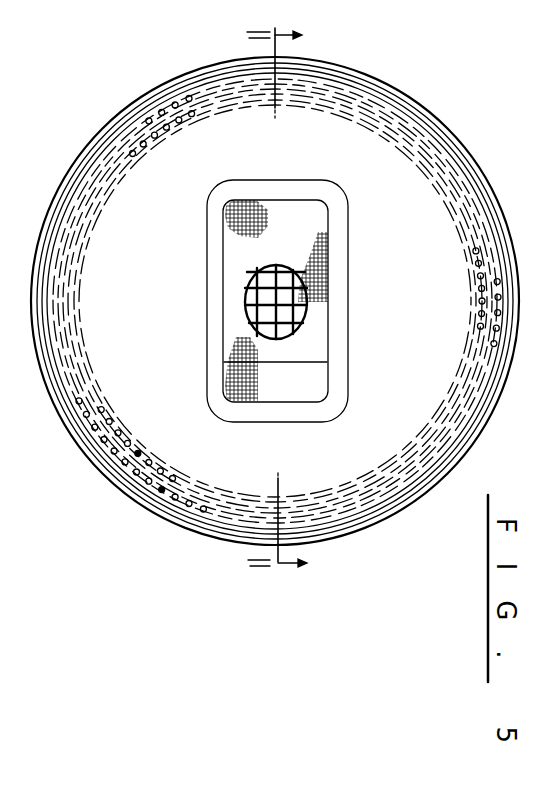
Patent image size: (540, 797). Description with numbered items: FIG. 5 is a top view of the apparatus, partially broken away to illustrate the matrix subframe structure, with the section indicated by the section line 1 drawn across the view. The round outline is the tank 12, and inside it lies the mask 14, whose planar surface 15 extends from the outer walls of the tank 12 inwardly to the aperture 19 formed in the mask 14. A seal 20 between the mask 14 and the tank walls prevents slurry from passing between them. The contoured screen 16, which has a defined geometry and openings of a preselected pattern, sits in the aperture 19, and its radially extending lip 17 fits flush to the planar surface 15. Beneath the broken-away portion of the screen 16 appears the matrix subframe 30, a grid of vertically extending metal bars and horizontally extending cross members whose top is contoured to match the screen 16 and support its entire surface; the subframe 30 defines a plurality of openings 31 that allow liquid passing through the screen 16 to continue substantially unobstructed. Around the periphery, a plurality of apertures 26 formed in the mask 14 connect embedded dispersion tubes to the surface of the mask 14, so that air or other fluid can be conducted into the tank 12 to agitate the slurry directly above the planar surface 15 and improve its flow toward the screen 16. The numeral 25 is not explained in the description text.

The section line 1- 1 is at (298, 318).
The tank 12 is at (88, 458).
The mask 14 is at (385, 438).
The planar surface 15 is at (411, 280).
The contoured screen 16 is at (242, 229).
The radially extending lip 17 is at (213, 208).
The aperture 19 is at (301, 413).
The seal 20 is at (180, 517).
The perforations 25 is at (158, 122).
The apertures 26 is at (138, 454).
The matrix subframe 30 is at (270, 312).
The openings 31 is at (262, 290).